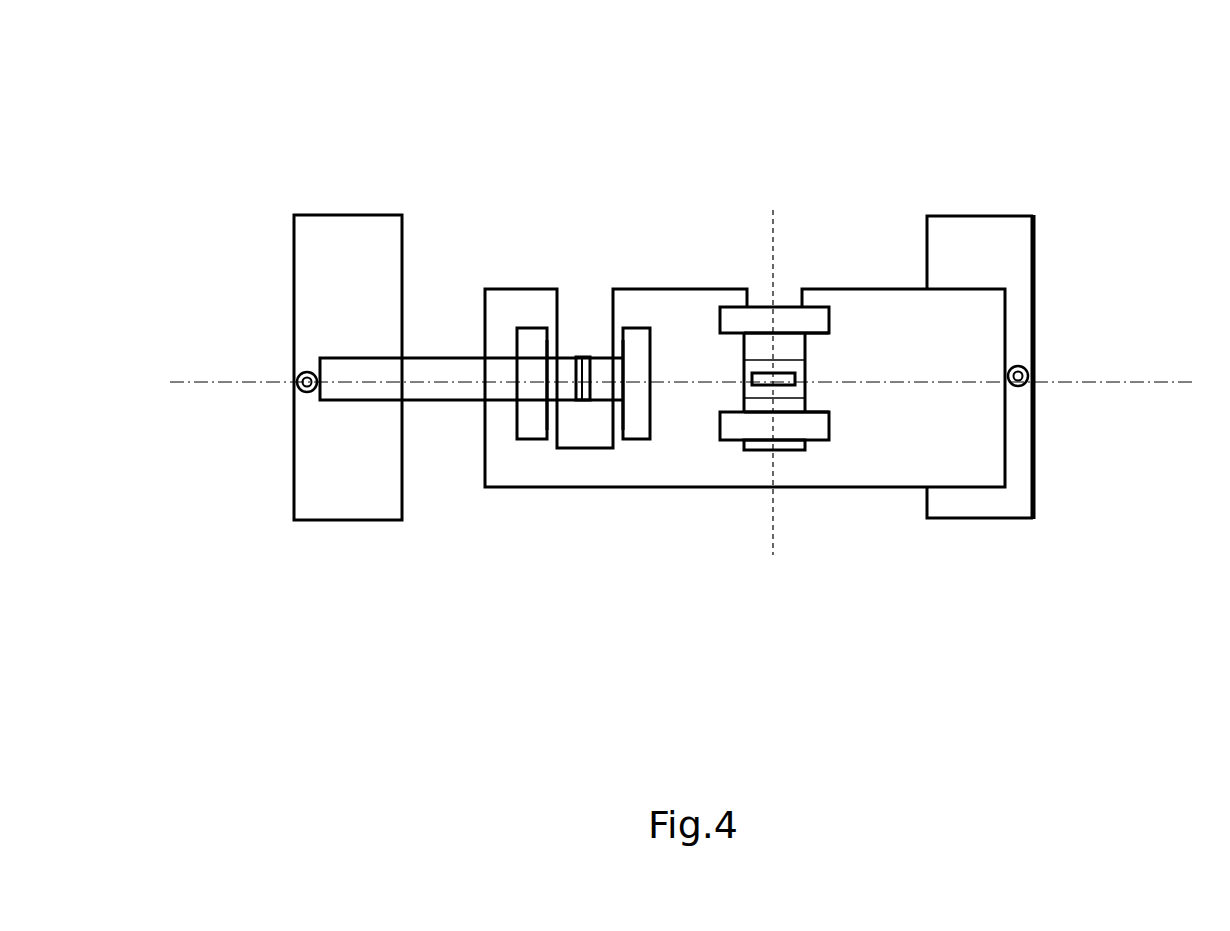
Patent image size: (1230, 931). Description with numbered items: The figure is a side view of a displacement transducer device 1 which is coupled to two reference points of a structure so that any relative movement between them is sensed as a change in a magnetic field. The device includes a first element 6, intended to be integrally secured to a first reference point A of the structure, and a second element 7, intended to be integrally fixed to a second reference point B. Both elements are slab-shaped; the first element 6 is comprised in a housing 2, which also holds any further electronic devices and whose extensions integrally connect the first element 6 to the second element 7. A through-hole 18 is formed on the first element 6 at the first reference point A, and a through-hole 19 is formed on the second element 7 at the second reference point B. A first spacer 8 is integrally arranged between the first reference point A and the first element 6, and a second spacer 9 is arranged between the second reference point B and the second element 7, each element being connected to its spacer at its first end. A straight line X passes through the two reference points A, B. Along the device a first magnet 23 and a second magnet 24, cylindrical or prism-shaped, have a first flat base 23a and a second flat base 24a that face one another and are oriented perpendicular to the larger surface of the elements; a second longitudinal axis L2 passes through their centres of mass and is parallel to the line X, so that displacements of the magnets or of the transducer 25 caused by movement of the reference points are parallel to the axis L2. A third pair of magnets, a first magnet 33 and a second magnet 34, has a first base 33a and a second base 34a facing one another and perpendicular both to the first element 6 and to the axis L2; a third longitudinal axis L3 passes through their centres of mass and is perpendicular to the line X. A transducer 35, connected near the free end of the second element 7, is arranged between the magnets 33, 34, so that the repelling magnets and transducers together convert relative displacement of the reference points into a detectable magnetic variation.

The displacement transducer device 1 is at (1064, 192).
The housing 2 is at (1010, 343).
The first element 6 is at (988, 288).
The second element 7 is at (302, 372).
The first spacer 8 is at (1018, 485).
The second spacer 9 is at (300, 498).
The through-hole 18 is at (1033, 366).
The through-hole 19 is at (298, 378).
The first magnet 23 is at (517, 340).
The first flat base 23a is at (583, 355).
The second magnet 24 is at (643, 372).
The second flat base 24a is at (592, 368).
The transducer 25 is at (586, 357).
The first magnet 33 is at (815, 305).
The first base 33a is at (812, 337).
The second magnet 34 is at (805, 423).
The second base 34a is at (815, 408).
The transducer 35 is at (793, 368).
The second longitudinal axis L2 is at (452, 375).
The third longitudinal axis L3 is at (773, 232).
The straight line X is at (205, 383).
The first reference point A is at (1024, 386).
The second reference point B is at (300, 392).